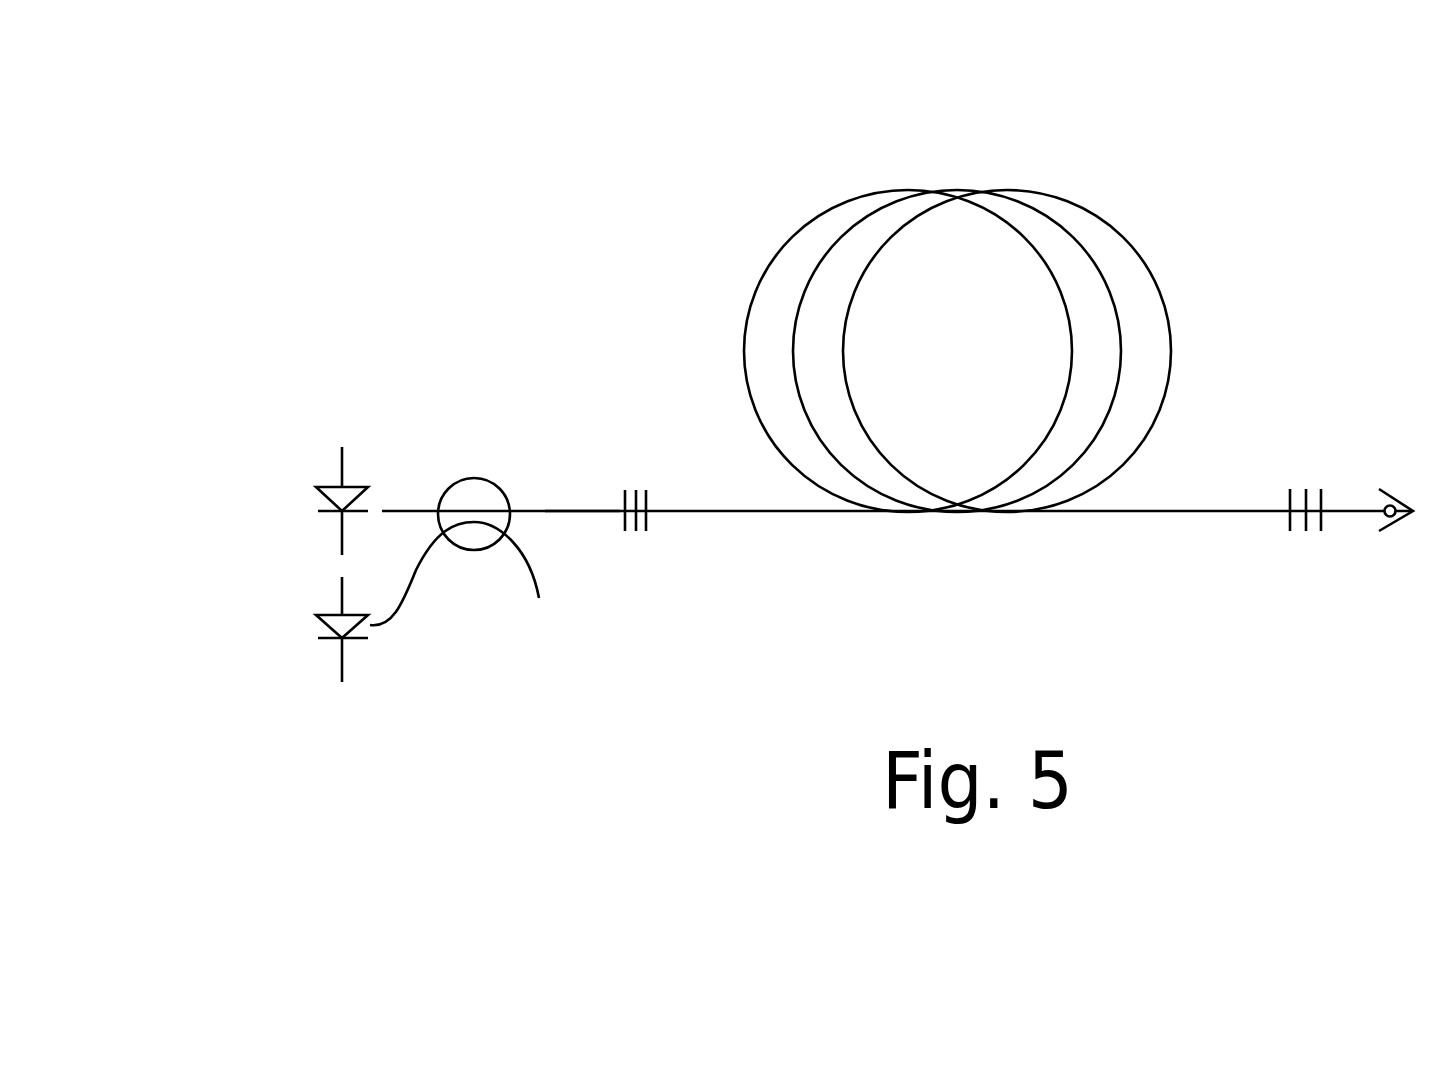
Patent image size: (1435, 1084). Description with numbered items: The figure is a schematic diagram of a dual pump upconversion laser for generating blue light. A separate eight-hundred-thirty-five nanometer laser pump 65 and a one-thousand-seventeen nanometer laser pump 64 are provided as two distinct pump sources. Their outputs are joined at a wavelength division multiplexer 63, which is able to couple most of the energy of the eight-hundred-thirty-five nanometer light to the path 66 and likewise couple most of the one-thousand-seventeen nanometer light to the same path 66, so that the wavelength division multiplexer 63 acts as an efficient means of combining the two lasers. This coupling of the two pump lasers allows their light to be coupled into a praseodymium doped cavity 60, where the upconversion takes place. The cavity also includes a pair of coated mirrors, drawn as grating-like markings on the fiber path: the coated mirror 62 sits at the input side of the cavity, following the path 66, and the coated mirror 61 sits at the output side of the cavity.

The praseodymium doped cavity 60 is at (1200, 338).
The coated mirror 61 is at (1294, 560).
The input fiber grating 62 is at (650, 494).
The wavelength division multiplexer 63 is at (466, 479).
The 1017 nm laser pump 64 is at (305, 506).
The 835 nm laser pump 65 is at (228, 630).
The path 66 is at (588, 530).